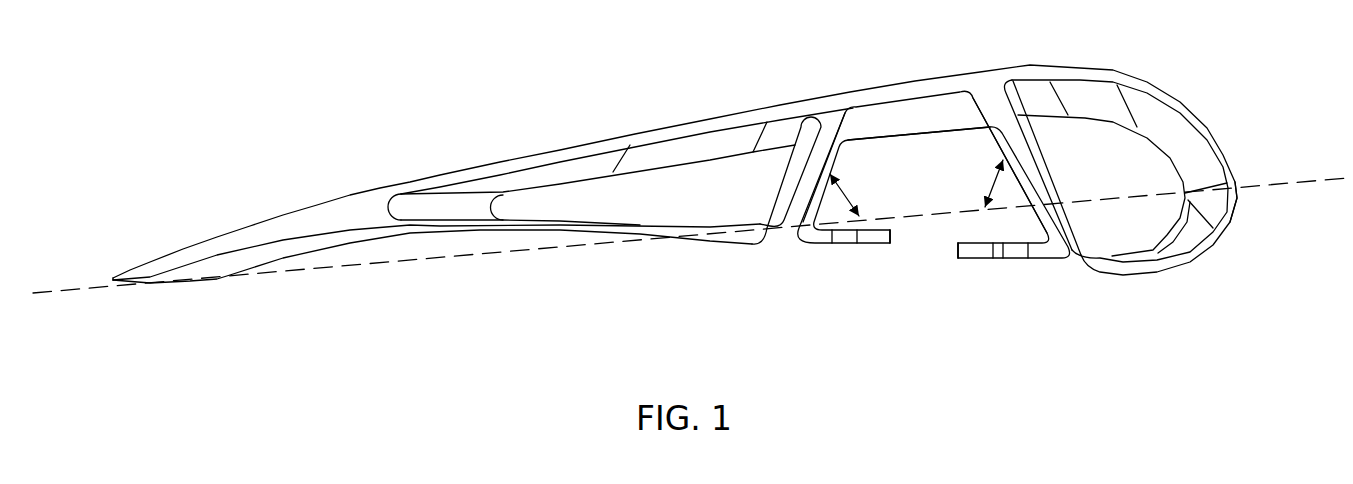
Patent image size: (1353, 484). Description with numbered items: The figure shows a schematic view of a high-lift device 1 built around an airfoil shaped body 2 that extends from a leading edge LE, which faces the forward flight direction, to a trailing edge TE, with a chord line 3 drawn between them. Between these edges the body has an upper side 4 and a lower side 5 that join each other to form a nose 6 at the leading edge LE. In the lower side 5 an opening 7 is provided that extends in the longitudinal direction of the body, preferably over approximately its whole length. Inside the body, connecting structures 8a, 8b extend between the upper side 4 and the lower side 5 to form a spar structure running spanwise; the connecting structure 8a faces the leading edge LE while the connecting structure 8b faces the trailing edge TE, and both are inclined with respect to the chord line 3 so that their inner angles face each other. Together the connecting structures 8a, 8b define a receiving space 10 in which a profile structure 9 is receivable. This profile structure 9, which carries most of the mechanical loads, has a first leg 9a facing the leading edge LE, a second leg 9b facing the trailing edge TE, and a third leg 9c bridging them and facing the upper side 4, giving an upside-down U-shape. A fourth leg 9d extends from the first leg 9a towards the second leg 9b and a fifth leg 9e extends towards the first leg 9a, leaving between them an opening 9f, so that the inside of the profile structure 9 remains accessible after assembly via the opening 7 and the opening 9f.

The high-lift device 1 is at (406, 119).
The airfoil shaped body 2 is at (1100, 70).
The chord line 3 is at (452, 256).
The upper side 4 is at (801, 100).
The lower side 5 is at (525, 233).
The nose 6 is at (1229, 150).
The opening 7 is at (907, 278).
The connecting structure 8a is at (1078, 230).
The connecting structure 8b is at (787, 217).
The profile structure 9 is at (1043, 260).
The first leg 9a is at (1032, 185).
The second leg 9b is at (814, 193).
The third leg 9c is at (897, 136).
The fourth leg 9d is at (983, 250).
The fifth leg 9e is at (826, 238).
The opening 9f is at (942, 254).
The receiving space 10 is at (937, 116).
The trailing edge TE is at (181, 292).
The leading edge LE is at (1239, 218).